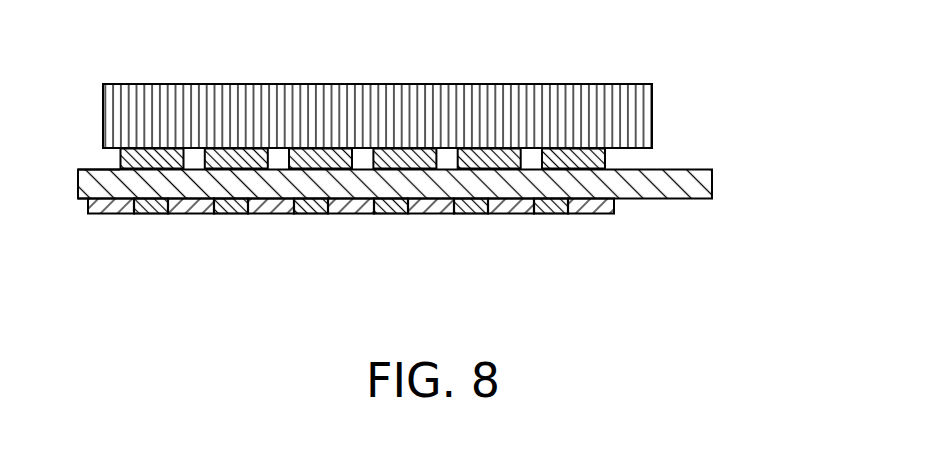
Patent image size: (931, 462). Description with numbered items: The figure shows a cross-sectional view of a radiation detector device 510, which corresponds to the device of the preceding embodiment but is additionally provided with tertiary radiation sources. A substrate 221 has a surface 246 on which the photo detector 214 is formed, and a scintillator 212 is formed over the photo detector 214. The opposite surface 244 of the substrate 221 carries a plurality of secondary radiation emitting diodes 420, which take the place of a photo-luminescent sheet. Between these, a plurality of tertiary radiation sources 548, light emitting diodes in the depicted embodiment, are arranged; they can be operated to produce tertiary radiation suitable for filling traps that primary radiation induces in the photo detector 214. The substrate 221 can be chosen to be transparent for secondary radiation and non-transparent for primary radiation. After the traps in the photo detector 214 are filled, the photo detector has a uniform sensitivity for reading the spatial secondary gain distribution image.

The radiation detector device 510 is at (766, 86).
The scintillator 212 is at (642, 112).
The photo detector 214 is at (646, 157).
The substrate 221 is at (708, 185).
The surface 246 is at (88, 168).
The surface 244 is at (80, 200).
The secondary radiation emitting diodes 420 is at (122, 214).
The tertiary radiation sources 548 is at (148, 214).